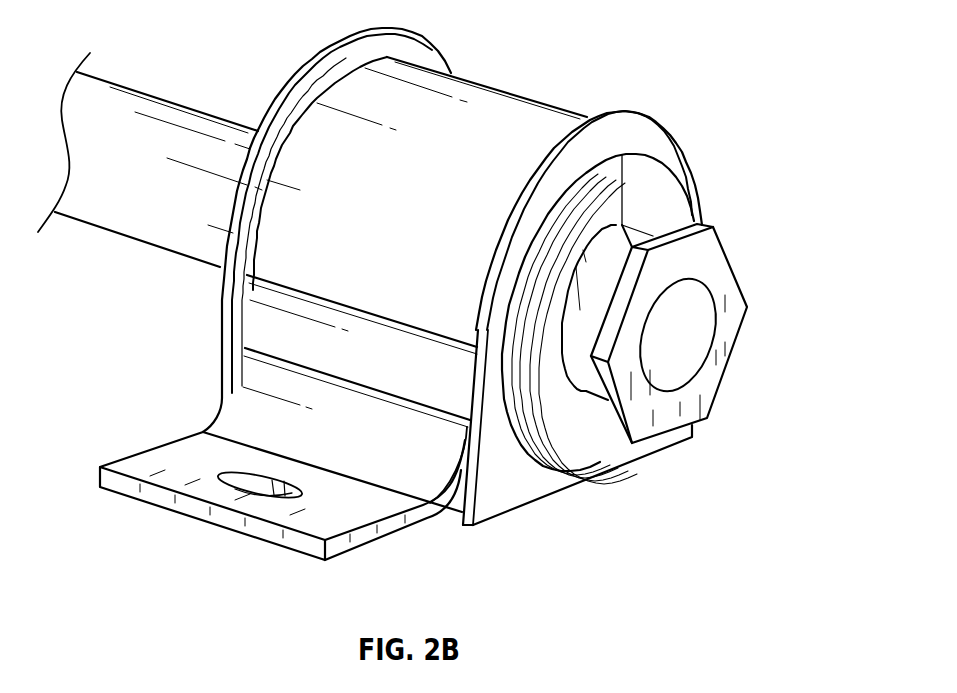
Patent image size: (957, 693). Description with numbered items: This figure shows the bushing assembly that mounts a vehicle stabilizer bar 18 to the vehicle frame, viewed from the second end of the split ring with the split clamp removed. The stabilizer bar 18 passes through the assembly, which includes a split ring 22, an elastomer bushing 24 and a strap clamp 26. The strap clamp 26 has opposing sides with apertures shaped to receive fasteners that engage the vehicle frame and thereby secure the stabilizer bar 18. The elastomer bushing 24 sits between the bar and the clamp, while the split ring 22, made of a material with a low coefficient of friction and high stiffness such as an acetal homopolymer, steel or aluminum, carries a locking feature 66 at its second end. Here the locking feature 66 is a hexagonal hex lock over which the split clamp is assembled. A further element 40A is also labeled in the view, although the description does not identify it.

The stabilizer bar 18 is at (195, 118).
The strap clamp 26 is at (502, 116).
The elastomer bushing 24 is at (640, 124).
The raised ring 40A is at (675, 187).
The split ring 22 is at (690, 193).
The locking feature 66 is at (620, 455).